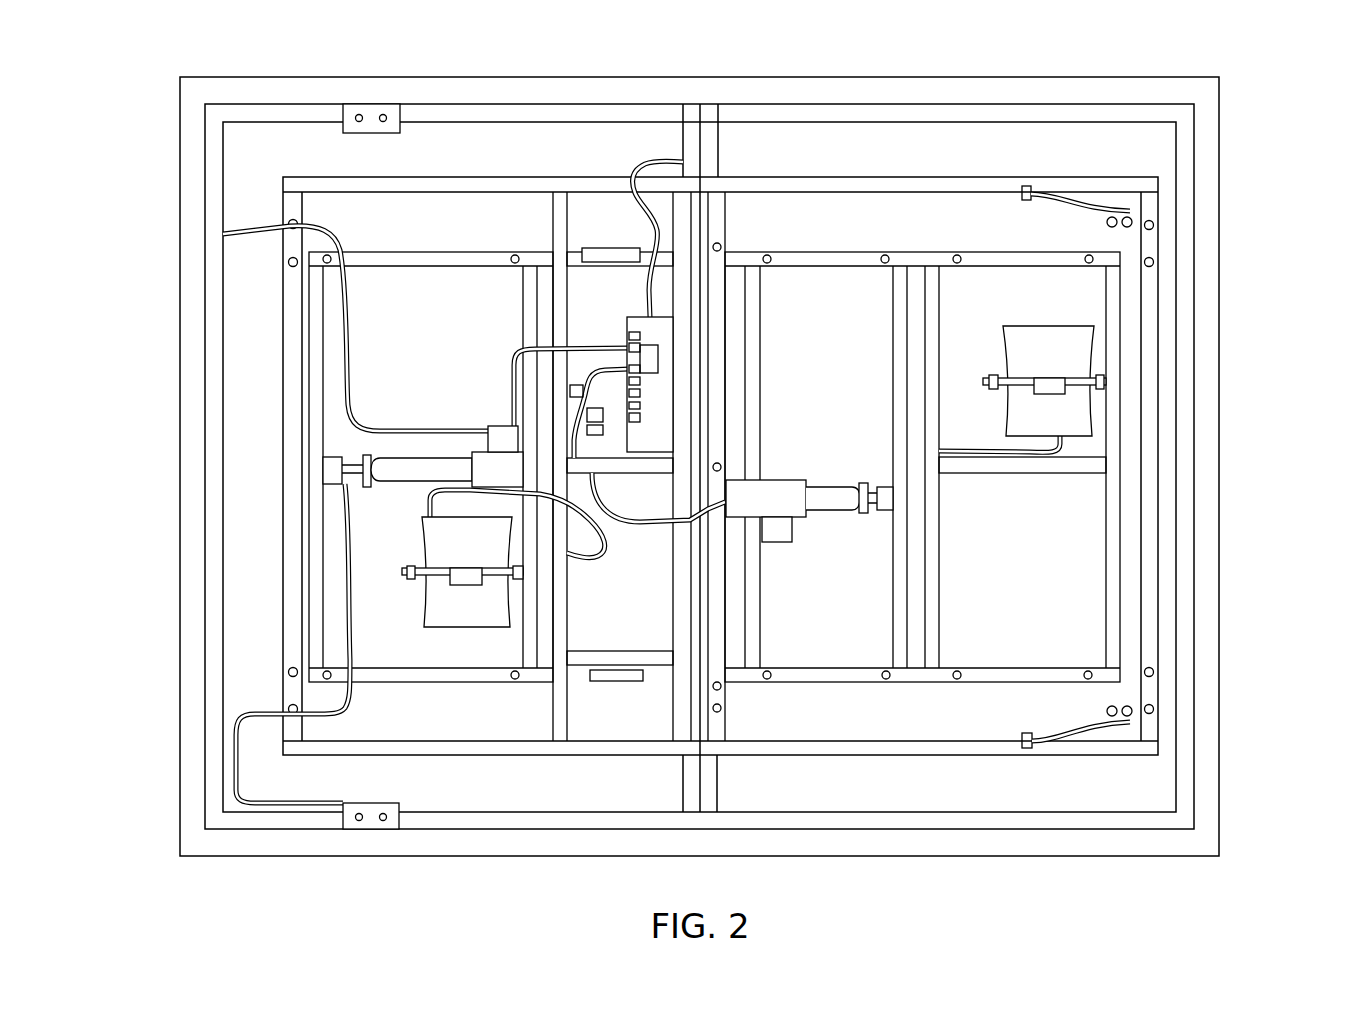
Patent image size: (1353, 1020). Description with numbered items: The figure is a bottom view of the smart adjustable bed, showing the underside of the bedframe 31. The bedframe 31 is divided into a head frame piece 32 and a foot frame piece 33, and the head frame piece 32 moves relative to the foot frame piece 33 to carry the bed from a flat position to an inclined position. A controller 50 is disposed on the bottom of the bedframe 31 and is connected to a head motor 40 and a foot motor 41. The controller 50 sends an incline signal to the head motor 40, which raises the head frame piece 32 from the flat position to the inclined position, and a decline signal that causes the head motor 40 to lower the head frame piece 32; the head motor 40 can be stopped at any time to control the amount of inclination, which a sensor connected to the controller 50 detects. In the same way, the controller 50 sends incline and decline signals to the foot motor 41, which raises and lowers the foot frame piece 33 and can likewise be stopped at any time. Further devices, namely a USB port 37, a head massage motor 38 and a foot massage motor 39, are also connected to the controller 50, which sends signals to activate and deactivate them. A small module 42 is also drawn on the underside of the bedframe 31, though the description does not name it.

The bedframe 31 is at (138, 486).
The head frame piece 32 is at (180, 309).
The foot frame piece 33 is at (1220, 287).
The USB port 37 is at (369, 822).
The head massage motor 38 is at (467, 577).
The foot massage motor 39 is at (1020, 372).
The head motor 40 is at (400, 482).
The foot motor 41 is at (823, 515).
The sensor module 42 is at (607, 248).
The controller 50 is at (655, 330).